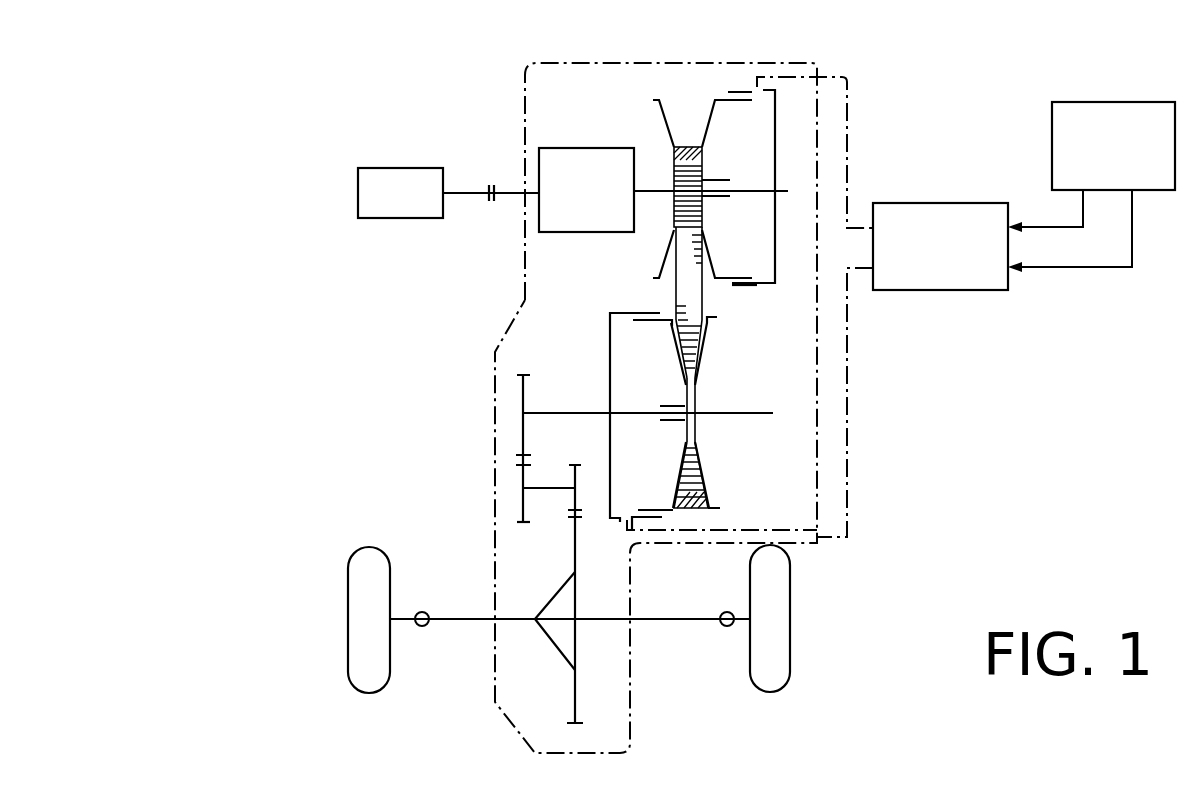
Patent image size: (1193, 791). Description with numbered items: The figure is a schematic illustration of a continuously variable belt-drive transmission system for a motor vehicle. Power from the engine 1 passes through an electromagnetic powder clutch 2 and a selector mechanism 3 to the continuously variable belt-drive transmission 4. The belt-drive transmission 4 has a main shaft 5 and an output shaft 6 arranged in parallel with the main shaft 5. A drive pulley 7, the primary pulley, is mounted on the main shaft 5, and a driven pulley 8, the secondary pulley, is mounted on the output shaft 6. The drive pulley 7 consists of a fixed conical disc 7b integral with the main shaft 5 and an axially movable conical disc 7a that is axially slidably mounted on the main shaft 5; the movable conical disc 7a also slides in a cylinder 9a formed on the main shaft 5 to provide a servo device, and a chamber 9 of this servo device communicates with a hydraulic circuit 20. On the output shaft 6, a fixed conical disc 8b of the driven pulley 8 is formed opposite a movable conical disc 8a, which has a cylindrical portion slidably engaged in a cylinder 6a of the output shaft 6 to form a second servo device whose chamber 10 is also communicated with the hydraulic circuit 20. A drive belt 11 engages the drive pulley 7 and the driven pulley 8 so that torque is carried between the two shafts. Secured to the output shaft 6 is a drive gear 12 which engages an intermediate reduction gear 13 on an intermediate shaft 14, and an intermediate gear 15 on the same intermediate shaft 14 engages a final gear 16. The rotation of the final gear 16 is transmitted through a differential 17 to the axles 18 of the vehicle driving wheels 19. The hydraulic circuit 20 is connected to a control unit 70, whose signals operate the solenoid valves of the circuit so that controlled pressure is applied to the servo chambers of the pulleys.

The engine 1 is at (406, 168).
The electromagnetic powder clutch 2 is at (492, 184).
The selector mechanism 3 is at (587, 147).
The continuously variable belt-drive transmission 4 is at (696, 100).
The main shaft 5 is at (645, 194).
The output shaft 6 is at (566, 413).
The cylinder 6a is at (628, 312).
The drive pulley 7 is at (688, 141).
The axially movable conical disc 7a is at (726, 97).
The fixed conical disc 7b is at (655, 132).
The driven pulley 8 is at (698, 412).
The movable conical disc 8a is at (672, 330).
The fixed conical disc 8b is at (700, 355).
The chamber 9 is at (758, 147).
The cylinder 9a is at (757, 286).
The chamber 10 is at (610, 345).
The drive belt 11 is at (695, 510).
The drive gear 12 is at (526, 372).
The intermediate reduction gear 13 is at (524, 524).
The intermediate shaft 14 is at (547, 488).
The intermediate gear 15 is at (575, 465).
The final gear 16 is at (577, 725).
The differential 17 is at (562, 599).
The axles 18 is at (411, 620).
The vehicle driving wheels 19 is at (382, 578).
The hydraulic circuit 20 is at (936, 292).
The control unit 70 is at (1088, 102).